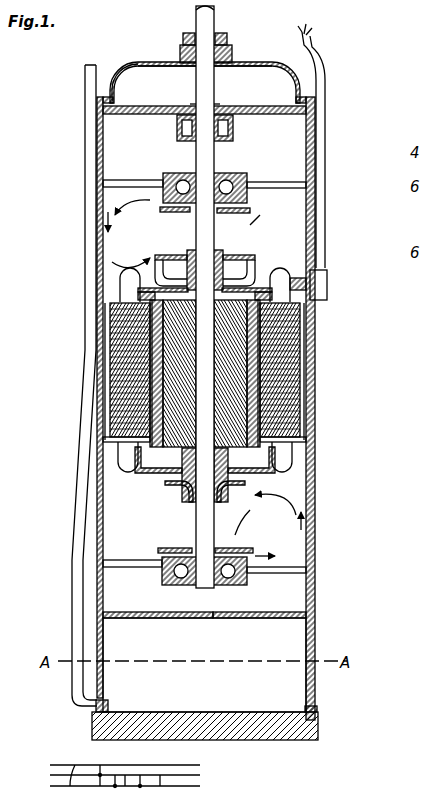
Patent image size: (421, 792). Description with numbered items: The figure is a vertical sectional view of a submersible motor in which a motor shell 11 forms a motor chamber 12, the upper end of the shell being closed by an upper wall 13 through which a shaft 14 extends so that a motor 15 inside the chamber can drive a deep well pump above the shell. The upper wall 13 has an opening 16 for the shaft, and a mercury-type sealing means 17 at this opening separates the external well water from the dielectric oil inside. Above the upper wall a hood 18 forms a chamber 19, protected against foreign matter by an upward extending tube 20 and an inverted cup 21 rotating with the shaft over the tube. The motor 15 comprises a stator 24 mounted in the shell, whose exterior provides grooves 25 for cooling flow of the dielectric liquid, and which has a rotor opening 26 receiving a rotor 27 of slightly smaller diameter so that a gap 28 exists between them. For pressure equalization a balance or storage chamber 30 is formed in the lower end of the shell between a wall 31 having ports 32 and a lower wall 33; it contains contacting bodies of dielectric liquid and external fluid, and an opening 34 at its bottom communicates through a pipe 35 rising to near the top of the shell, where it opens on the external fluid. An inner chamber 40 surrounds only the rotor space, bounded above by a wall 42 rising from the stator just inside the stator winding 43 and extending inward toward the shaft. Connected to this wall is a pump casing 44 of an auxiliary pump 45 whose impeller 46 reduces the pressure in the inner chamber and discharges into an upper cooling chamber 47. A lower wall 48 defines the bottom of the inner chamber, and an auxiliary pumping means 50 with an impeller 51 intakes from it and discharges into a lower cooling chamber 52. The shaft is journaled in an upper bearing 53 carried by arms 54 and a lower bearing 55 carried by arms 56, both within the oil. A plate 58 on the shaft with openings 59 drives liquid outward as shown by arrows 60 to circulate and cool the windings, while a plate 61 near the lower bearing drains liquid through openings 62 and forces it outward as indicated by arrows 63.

The motor shell 11 is at (313, 443).
The motor chamber 12 is at (301, 468).
The upper wall 13 is at (264, 106).
The shaft 14 is at (209, 79).
The motor 15 is at (118, 386).
The opening 16 is at (215, 104).
The sealing means 17 is at (234, 130).
The hood 18 is at (252, 63).
The chamber 19 is at (138, 77).
The tube 20 is at (200, 72).
The inverted cup 21 is at (226, 36).
The stator 24 is at (300, 350).
The grooves 25 is at (299, 405).
The rotor opening 26 is at (300, 325).
The rotor 27 is at (160, 347).
The gap 28 is at (290, 389).
The balance or storage chamber 30 is at (291, 645).
The wall 31 is at (200, 619).
The ports 32 is at (280, 619).
The lower wall 33 is at (258, 740).
The opening 34 is at (104, 705).
The pipe 35 is at (75, 633).
The inner chamber 40 is at (156, 458).
The wall 42 is at (264, 296).
The stator winding 43 is at (300, 292).
The pump casing 44 is at (248, 276).
The auxiliary pump 45 is at (234, 265).
The impeller 46 is at (190, 262).
The upper cooling chamber 47 is at (291, 217).
The lower wall 48 is at (150, 474).
The auxiliary pumping means 50 is at (168, 500).
The impeller 51 is at (184, 510).
The lower cooling chamber 52 is at (311, 514).
The upper bearing 53 is at (183, 178).
The arms 54 is at (275, 182).
The lower bearing 55 is at (172, 583).
The arms 56 is at (275, 574).
The plate 58 is at (162, 213).
The openings 59 is at (165, 231).
The arrows 60 is at (162, 195).
The plate 61 is at (241, 556).
The openings 62 is at (243, 540).
The arrows 63 is at (298, 535).